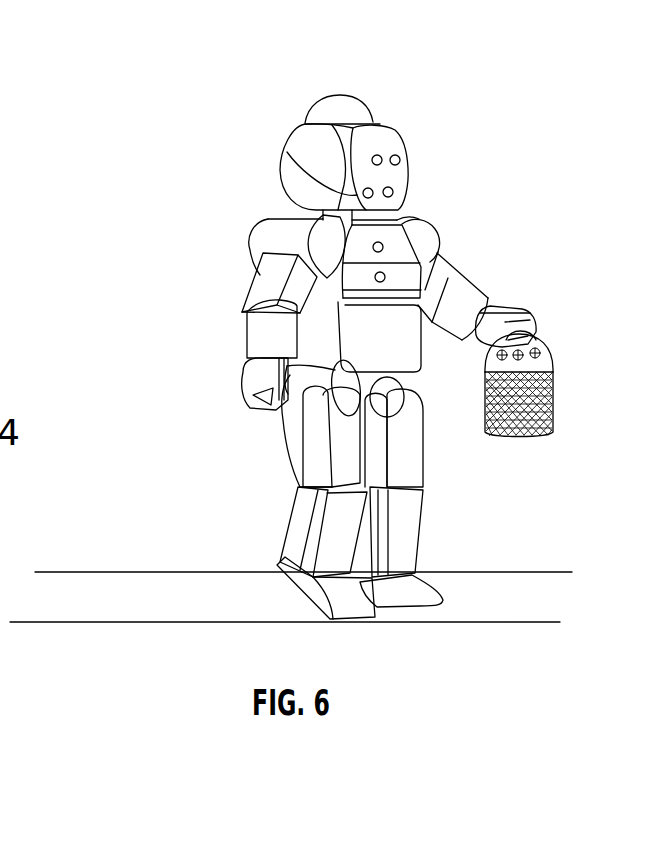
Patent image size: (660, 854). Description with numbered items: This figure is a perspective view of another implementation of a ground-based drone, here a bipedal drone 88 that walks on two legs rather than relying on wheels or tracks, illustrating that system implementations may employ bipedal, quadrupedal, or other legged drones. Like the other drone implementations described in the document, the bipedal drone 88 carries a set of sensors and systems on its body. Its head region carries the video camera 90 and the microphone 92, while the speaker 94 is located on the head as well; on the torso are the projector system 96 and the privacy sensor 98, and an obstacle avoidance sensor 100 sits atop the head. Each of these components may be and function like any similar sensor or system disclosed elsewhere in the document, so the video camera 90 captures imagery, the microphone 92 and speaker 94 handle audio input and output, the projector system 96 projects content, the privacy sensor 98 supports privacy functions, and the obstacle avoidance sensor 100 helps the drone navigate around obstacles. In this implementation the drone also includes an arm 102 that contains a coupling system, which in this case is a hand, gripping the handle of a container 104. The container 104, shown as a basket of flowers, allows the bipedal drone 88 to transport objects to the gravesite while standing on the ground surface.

The bipedal drone 88 is at (531, 113).
The video camera 90 is at (401, 159).
The microphone 92 is at (394, 192).
The speaker 94 is at (287, 152).
The projector system 96 is at (384, 247).
The privacy sensor 98 is at (386, 277).
The obstacle avoidance sensor 100 is at (340, 95).
The arm 102 is at (530, 320).
The container 104 is at (553, 389).